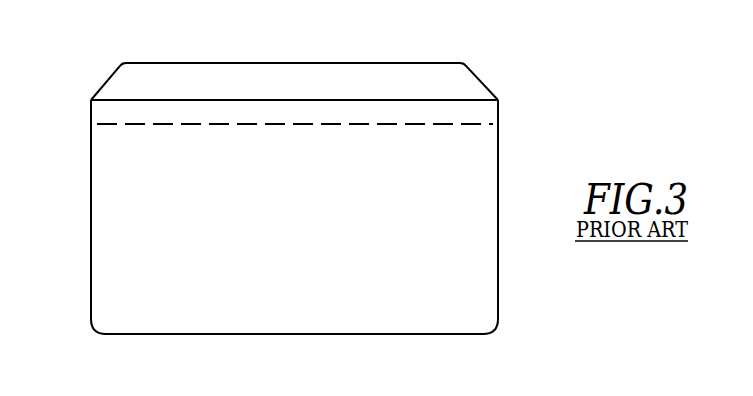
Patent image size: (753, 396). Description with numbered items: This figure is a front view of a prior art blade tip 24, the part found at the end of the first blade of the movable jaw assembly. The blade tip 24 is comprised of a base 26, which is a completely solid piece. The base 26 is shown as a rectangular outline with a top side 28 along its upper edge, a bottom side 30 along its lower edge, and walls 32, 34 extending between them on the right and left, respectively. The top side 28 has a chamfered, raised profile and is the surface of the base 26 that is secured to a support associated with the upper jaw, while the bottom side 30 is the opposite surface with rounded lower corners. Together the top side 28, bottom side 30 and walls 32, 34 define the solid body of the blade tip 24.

The blade tip 24 is at (105, 177).
The base 26 is at (484, 180).
The top side 28 is at (236, 73).
The bottom side 30 is at (255, 336).
The wall 32 is at (498, 270).
The wall 34 is at (91, 267).